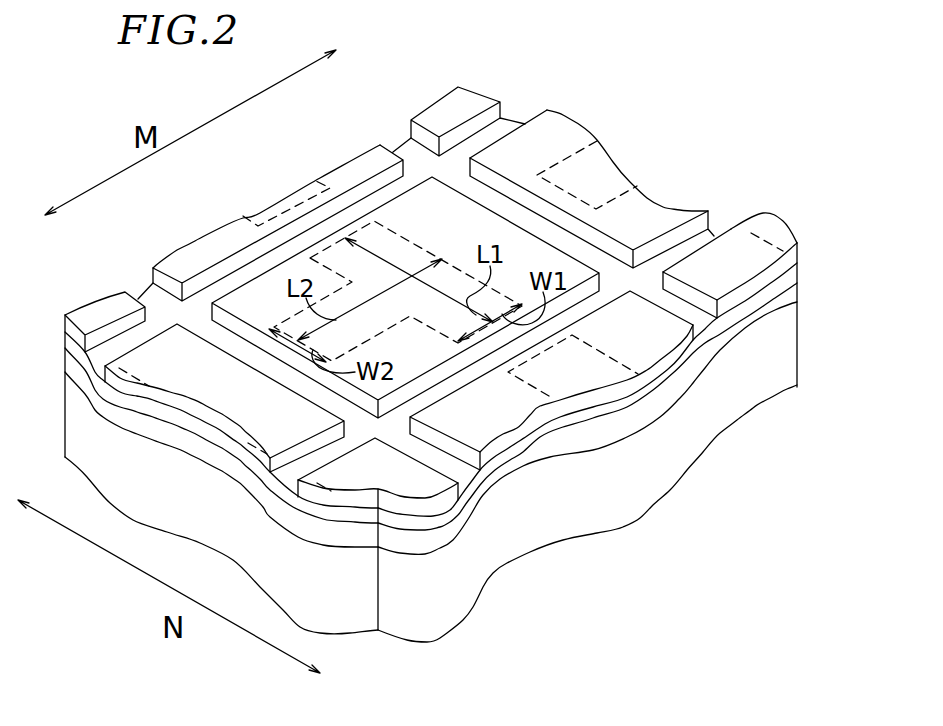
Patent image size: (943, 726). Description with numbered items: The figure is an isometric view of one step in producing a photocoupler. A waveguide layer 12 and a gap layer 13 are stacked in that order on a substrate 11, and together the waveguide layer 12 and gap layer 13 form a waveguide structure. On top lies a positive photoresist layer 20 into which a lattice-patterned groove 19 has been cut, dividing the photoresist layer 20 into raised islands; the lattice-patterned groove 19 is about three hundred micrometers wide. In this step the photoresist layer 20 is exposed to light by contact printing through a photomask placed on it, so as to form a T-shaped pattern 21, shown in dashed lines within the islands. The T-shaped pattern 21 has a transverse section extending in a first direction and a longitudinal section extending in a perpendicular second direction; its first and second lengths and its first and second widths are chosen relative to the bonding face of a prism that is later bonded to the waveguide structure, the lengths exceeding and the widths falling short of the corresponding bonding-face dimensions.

The substrate 11 is at (793, 350).
The waveguide layer 12 is at (797, 289).
The gap layer 13 is at (797, 267).
The lattice-patterned groove 19 is at (361, 208).
The photoresist layer 20 is at (758, 240).
The T-shaped pattern 21 is at (333, 262).